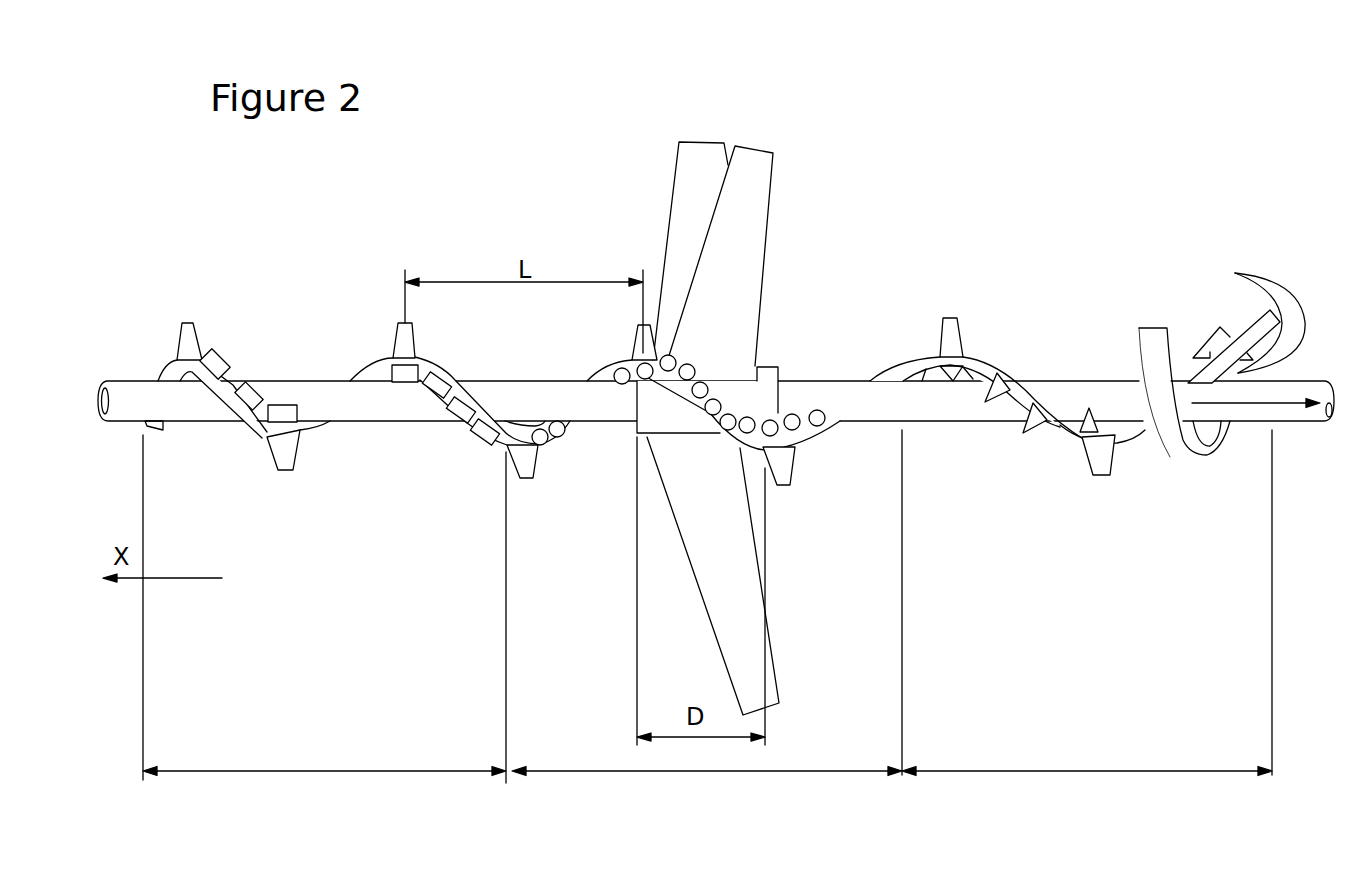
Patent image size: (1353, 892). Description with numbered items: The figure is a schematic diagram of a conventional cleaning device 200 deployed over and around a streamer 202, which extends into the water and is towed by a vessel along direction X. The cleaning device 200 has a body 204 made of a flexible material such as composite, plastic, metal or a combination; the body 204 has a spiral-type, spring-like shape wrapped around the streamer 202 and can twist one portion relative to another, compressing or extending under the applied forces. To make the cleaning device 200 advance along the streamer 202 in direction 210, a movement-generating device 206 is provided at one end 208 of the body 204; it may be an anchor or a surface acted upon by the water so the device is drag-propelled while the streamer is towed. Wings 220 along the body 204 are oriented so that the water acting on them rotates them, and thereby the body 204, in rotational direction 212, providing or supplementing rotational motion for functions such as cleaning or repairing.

The cleaning device 200 is at (915, 355).
The streamer 202 is at (1103, 398).
The body 204 is at (375, 372).
The movement-generating device 206 is at (1276, 292).
The end of the body 208 is at (1250, 327).
The direction of advance 210 is at (1257, 403).
The rotational direction 212 is at (1168, 435).
The wings 220 is at (782, 472).